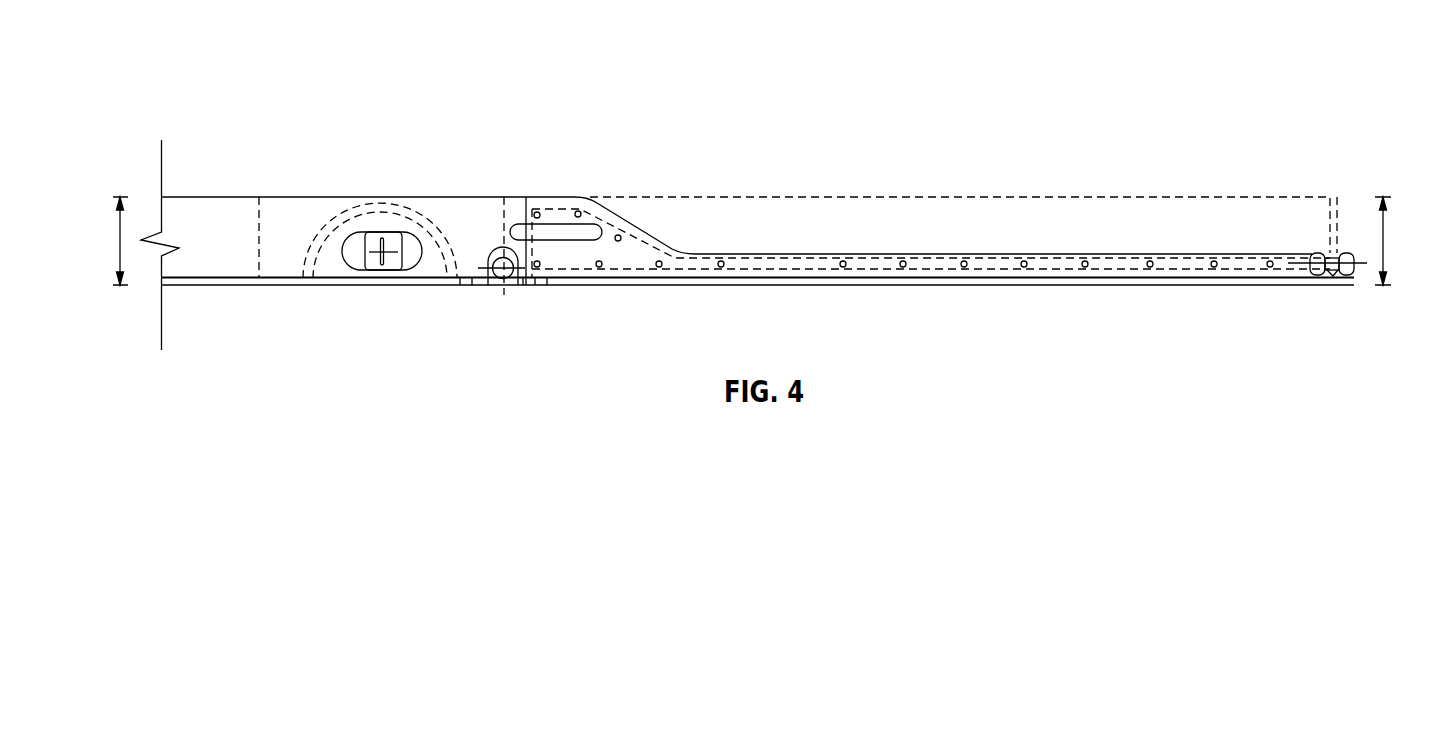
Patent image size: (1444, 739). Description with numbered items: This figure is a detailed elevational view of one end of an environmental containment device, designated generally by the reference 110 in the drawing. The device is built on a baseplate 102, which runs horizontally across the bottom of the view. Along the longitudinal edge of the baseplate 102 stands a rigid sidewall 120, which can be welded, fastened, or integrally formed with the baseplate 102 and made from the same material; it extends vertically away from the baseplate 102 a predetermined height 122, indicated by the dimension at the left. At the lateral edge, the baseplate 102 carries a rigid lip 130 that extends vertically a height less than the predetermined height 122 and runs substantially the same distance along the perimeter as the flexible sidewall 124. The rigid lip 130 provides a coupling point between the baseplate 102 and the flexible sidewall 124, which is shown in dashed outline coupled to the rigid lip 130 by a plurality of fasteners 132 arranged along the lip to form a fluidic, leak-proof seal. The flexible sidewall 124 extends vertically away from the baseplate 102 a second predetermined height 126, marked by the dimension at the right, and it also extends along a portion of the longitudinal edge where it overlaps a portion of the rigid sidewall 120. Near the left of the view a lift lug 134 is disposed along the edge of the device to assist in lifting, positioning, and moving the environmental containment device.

The mounting assembly 110 is at (480, 77).
The baseplate 102 is at (277, 289).
The rigid sidewall 120 is at (259, 197).
The predetermined height 122 is at (120, 240).
The flexible sidewall 124 is at (1265, 215).
The second predetermined height 126 is at (1383, 240).
The rigid lip 130 is at (933, 265).
The fasteners 132 is at (721, 268).
The lift lug 134 is at (405, 257).